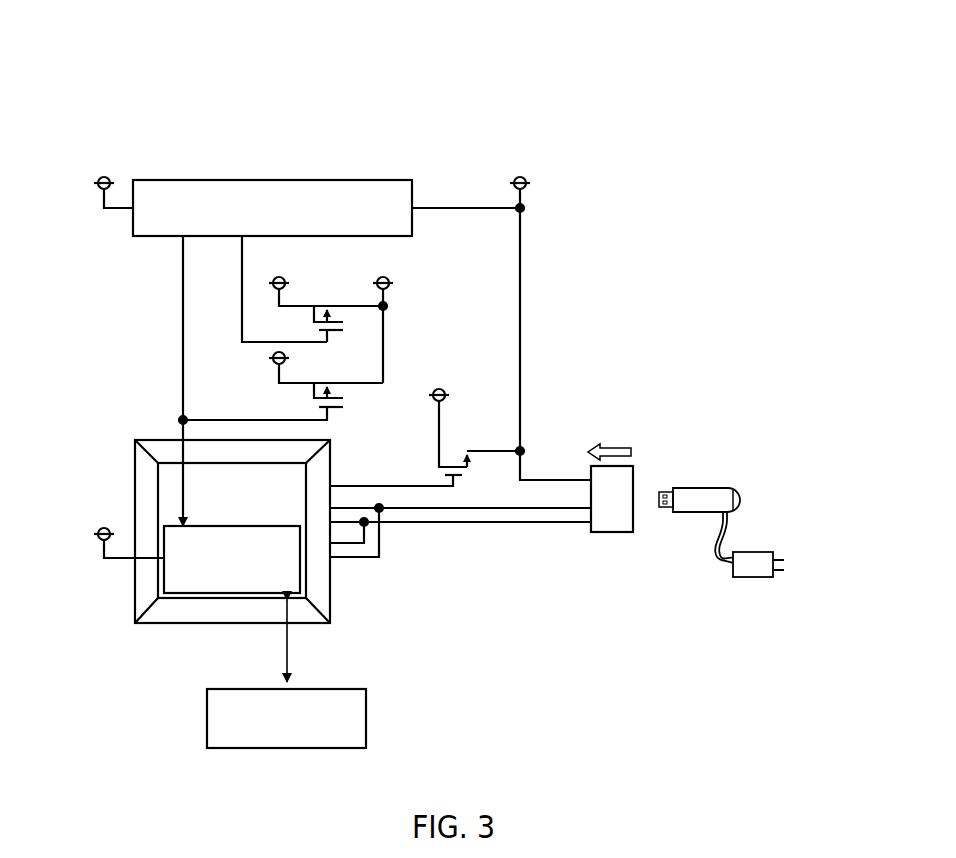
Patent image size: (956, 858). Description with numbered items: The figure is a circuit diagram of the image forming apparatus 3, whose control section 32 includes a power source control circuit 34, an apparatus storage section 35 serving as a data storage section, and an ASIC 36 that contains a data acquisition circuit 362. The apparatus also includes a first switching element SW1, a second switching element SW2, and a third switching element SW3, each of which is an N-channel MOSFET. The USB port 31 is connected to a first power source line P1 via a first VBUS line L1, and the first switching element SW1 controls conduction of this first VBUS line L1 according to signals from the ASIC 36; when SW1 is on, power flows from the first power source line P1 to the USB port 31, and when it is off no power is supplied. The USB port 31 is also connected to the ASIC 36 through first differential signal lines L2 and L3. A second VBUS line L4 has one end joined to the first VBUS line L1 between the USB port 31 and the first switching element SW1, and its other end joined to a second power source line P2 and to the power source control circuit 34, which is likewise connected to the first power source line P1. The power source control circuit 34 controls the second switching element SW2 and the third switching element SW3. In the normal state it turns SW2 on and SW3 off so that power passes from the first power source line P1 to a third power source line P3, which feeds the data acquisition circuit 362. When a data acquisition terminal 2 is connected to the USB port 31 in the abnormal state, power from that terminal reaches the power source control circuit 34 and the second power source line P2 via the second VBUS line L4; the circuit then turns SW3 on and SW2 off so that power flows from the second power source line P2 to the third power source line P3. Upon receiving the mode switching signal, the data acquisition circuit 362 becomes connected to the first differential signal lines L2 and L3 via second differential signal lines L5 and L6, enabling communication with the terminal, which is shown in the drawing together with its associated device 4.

The image forming apparatus 3 is at (617, 78).
The control section 32 is at (483, 125).
The power source control circuit 34 is at (363, 180).
The first power source line P1 is at (100, 177).
The second power source line P2 is at (524, 177).
The third power source line P3 is at (390, 283).
The first switching element SW1 is at (419, 460).
The second switching element SW2 is at (336, 302).
The third switching element SW3 is at (338, 378).
The first VBUS line L1 is at (497, 450).
The first differential signal line L2 is at (504, 507).
The first differential signal line L3 is at (527, 524).
The second VBUS line L4 is at (522, 322).
The second differential signal line L5 is at (372, 560).
The second differential signal line L6 is at (343, 545).
The ASIC 36 is at (140, 462).
The data acquisition circuit 362 is at (190, 594).
The apparatus storage section 35 is at (367, 706).
The USB port 31 is at (620, 533).
The data acquisition terminal 2 is at (690, 487).
The AC adapter 4 is at (750, 578).